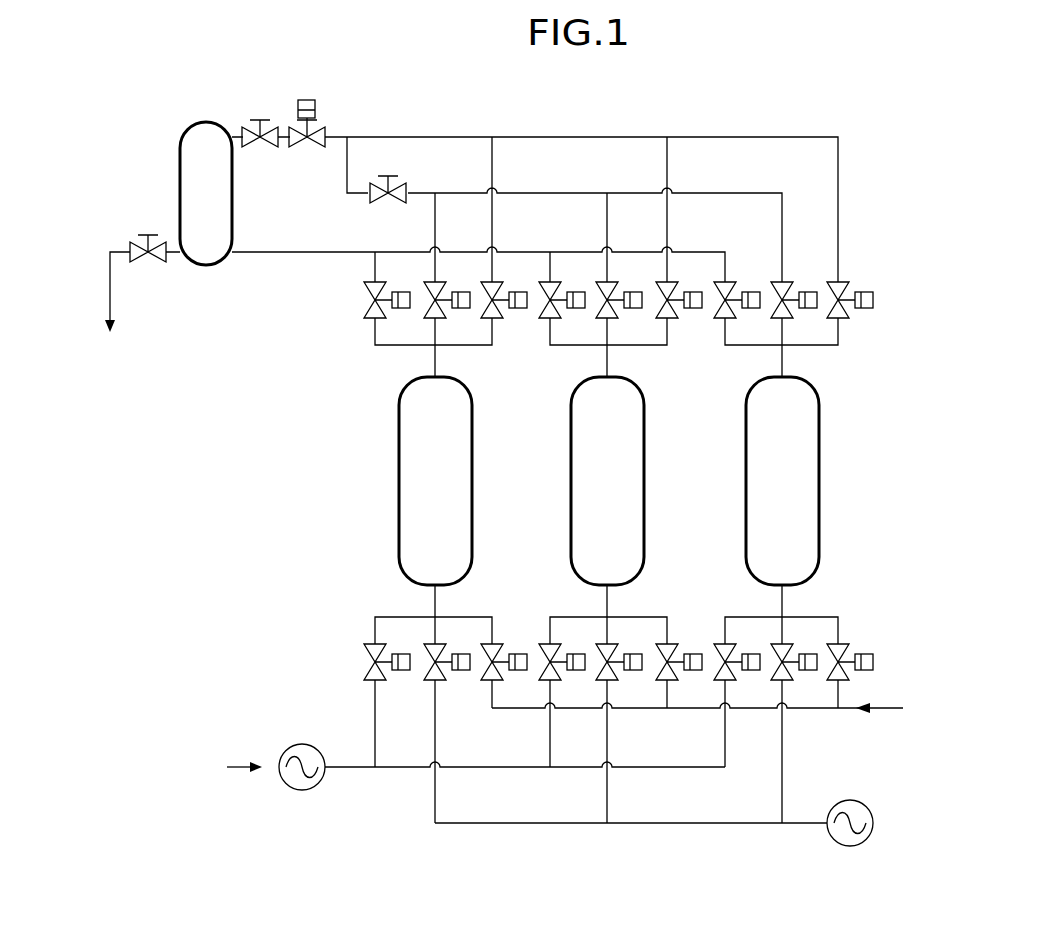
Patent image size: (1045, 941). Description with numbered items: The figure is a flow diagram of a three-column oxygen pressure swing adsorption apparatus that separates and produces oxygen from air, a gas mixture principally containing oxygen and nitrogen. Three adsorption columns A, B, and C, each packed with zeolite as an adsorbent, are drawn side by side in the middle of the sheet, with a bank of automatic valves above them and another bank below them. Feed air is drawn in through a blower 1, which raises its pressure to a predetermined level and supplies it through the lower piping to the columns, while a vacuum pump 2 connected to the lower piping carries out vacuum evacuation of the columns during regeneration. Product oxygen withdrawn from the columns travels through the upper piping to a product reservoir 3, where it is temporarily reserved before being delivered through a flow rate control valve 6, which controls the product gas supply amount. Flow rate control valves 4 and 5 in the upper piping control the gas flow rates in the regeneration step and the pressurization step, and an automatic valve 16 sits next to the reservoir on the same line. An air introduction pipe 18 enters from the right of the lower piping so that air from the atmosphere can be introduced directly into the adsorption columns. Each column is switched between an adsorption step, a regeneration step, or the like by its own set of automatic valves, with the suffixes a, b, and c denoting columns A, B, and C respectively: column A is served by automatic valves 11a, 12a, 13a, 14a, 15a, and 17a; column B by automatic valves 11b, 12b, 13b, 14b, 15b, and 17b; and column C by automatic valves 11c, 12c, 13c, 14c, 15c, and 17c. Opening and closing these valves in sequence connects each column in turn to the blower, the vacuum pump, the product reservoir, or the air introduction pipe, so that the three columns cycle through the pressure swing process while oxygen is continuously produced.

The blower 1 is at (292, 788).
The vacuum pump 2 is at (831, 841).
The product reservoir 3 is at (200, 122).
The flow rate control valve 4 is at (252, 127).
The flow rate control valve 5 is at (402, 183).
The flow rate control valve 6 is at (140, 258).
The automatic valve 16 is at (318, 127).
The air introduction pipe 18 is at (887, 711).
The automatic valve 11a is at (368, 648).
The automatic valve 11b is at (542, 648).
The automatic valve 11c is at (727, 647).
The automatic valve 12a is at (367, 308).
The automatic valve 12b is at (548, 320).
The automatic valve 12c is at (722, 320).
The automatic valve 13a is at (495, 320).
The automatic valve 13b is at (677, 290).
The automatic valve 13c is at (842, 285).
The automatic valve 14a is at (422, 287).
The automatic valve 14b is at (616, 312).
The automatic valve 14c is at (784, 284).
The automatic valve 15a is at (490, 677).
The automatic valve 15b is at (672, 647).
The automatic valve 15c is at (845, 645).
The automatic valve 17a is at (432, 675).
The automatic valve 17b is at (600, 647).
The automatic valve 17c is at (787, 678).
The adsorption column A is at (399, 494).
The adsorption column B is at (571, 515).
The adsorption column C is at (746, 522).